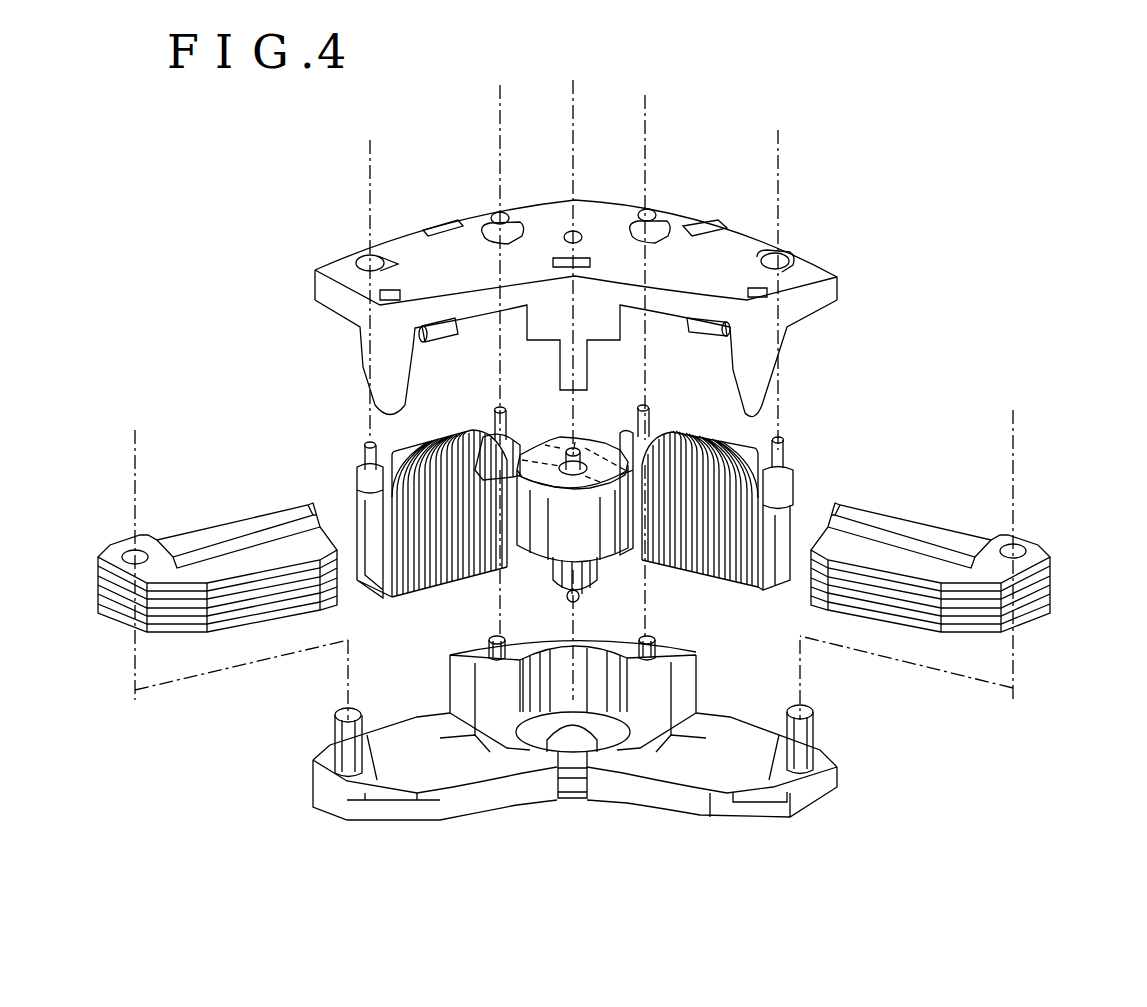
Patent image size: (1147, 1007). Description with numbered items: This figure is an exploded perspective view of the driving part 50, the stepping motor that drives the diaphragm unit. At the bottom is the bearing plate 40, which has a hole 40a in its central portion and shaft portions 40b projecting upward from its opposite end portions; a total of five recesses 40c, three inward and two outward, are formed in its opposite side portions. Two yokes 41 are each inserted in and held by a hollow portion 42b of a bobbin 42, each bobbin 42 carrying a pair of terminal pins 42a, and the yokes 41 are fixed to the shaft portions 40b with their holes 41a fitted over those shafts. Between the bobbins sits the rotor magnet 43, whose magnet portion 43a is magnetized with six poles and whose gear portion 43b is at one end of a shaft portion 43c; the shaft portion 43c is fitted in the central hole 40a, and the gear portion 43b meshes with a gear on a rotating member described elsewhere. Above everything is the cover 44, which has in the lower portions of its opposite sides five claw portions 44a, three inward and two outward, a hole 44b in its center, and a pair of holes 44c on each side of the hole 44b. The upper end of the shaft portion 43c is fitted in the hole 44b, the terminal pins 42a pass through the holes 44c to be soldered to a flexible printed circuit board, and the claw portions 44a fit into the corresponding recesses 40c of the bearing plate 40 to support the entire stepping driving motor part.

The driving part 50 is at (913, 386).
The cover 44 is at (840, 301).
The claw portions 44a is at (388, 376).
The hole 44b is at (578, 235).
The holes 44c is at (372, 262).
The bobbins 42 is at (362, 485).
The terminal pins 42a is at (368, 450).
The hollow portions 42b is at (378, 540).
The rotor magnet 43 is at (624, 560).
The magnet portion 43a is at (535, 458).
The gear portion 43b is at (553, 575).
The shaft portion 43c is at (582, 450).
The yokes 41 is at (235, 530).
The holes 41a is at (133, 553).
The bearing plate 40 is at (655, 815).
The hole 40a is at (580, 805).
The shaft portions 40b is at (340, 742).
The recesses 40c is at (440, 700).